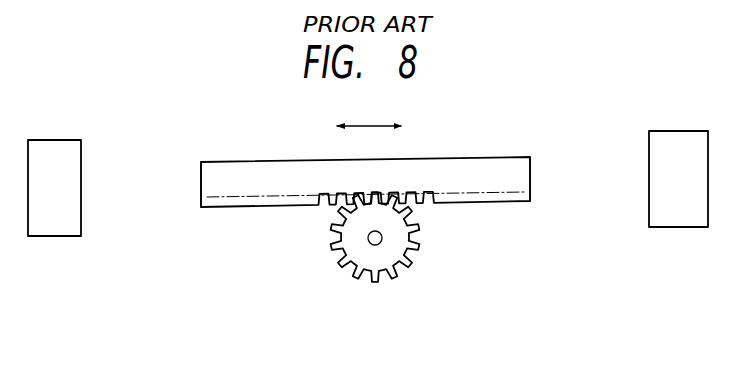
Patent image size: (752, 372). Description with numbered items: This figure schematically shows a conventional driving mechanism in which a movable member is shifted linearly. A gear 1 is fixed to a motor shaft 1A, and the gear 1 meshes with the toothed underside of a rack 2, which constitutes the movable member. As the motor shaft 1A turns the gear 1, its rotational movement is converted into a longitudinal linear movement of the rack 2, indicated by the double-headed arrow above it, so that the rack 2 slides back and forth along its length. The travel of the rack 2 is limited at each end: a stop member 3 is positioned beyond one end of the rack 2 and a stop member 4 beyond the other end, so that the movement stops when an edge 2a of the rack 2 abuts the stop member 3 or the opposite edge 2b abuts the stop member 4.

The gear 1 is at (419, 243).
The motor shaft 1A is at (366, 239).
The rack 2 is at (459, 156).
The edge of the rack 2a is at (200, 172).
The edge of the rack 2b is at (532, 172).
The stop member 3 is at (84, 160).
The stop member 4 is at (648, 144).